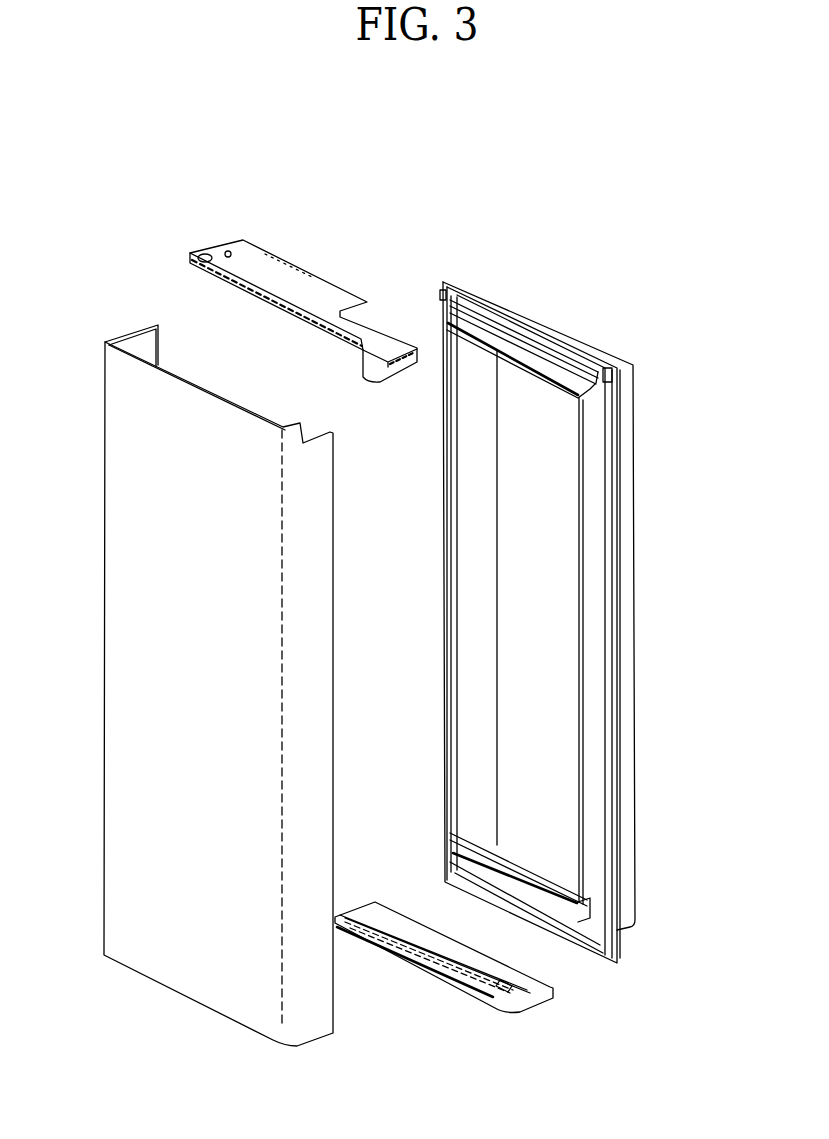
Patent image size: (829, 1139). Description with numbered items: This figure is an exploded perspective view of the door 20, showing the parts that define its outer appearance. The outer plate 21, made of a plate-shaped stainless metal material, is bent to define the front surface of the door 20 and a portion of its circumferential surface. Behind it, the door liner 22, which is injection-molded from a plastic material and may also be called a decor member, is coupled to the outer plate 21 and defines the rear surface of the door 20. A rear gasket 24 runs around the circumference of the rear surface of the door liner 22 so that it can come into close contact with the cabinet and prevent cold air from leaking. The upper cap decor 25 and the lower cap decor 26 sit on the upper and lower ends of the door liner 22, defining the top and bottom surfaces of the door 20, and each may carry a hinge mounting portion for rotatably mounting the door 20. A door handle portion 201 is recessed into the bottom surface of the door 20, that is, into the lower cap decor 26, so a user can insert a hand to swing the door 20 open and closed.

The door 20 is at (466, 175).
The outer plate 21 is at (232, 1025).
The door liner 22 is at (636, 848).
The rear gasket 24 is at (615, 762).
The upper cap decor 25 is at (279, 237).
The lower cap decor 26 is at (445, 998).
The door handle portion 201 is at (467, 997).